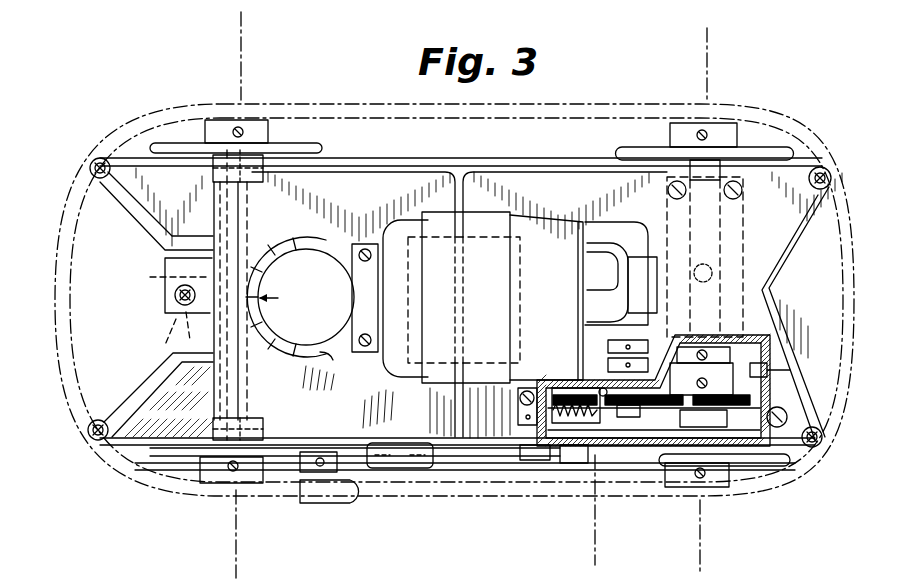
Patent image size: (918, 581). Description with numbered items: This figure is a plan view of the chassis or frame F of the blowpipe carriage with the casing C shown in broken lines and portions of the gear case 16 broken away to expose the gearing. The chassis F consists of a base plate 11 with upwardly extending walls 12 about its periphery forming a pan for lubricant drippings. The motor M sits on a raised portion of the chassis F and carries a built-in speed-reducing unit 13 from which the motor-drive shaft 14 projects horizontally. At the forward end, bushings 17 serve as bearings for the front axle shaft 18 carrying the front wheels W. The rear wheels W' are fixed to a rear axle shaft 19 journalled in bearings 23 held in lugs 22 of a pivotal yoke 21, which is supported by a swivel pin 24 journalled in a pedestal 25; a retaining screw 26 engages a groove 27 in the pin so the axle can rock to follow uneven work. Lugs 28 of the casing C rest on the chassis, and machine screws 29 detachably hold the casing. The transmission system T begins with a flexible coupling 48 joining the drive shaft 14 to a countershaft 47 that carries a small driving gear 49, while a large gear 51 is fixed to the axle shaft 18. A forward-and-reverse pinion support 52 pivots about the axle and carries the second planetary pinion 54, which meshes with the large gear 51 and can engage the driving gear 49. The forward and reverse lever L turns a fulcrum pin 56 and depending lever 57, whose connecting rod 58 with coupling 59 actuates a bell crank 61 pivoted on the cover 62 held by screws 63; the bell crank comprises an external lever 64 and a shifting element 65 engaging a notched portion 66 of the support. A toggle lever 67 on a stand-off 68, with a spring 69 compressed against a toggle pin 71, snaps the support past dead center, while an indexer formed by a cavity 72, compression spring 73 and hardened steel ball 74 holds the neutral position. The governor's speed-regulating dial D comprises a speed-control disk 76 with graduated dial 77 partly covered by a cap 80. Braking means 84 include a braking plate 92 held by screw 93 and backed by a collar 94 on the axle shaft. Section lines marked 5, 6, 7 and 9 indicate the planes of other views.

The section line 5- 5 is at (710, 47).
The section line 6- 6 is at (244, 43).
The section line 7- 7 is at (591, 548).
The section line 9- 9 is at (481, 444).
The base plate 11 is at (443, 432).
The upwardly extending flanges or walls 12 is at (562, 158).
The built-in speed-reducing unit 13 is at (618, 218).
The motor-drive shaft 14 is at (628, 340).
The gear case 16 is at (730, 418).
The bushings 17 is at (690, 170).
The front axle shaft 18 is at (700, 243).
The rear axle shaft 19 is at (244, 390).
The pivotal yoke 21 is at (238, 370).
The ears or lugs 22 is at (250, 185).
The bearings 23 is at (250, 182).
The swivel pin 24 is at (165, 278).
The pedestal 25 is at (182, 258).
The retaining screw 26 is at (178, 301).
The groove 27 is at (181, 350).
The lugs 28 is at (104, 195).
The machine screws 29 is at (832, 165).
The countershaft 47 is at (655, 430).
The flexible coupling 48 is at (608, 346).
The small driving gear 49 is at (622, 430).
The large gear 51 is at (700, 398).
The forward-and-reverse pinion support 52 is at (638, 430).
The second planetary pinion 54 is at (668, 432).
The fulcrum pin 56 is at (322, 505).
The lever 57 is at (305, 475).
The connecting rod 58 is at (467, 462).
The coupling 59 is at (385, 445).
The bell crank 61 is at (548, 462).
The cover 62 is at (722, 228).
The screws 63 is at (670, 196).
The lever 64 is at (530, 460).
The shifting element 65 is at (574, 464).
The notched portion 66 is at (590, 465).
The toggle lever 67 is at (560, 388).
The stand-off 68 is at (546, 383).
The spring 69 is at (575, 402).
The toggle pin 71 is at (598, 388).
The cavity 72 is at (518, 396).
The compression spring 73 is at (530, 442).
The hardened steel ball 74 is at (556, 450).
The speed-control disk 76 is at (325, 357).
The graduated dial 77 is at (288, 248).
The cap 80 is at (320, 268).
The braking means 84 is at (742, 366).
The braking plate 92 is at (716, 372).
The screw 93 is at (790, 371).
The collar 94 is at (718, 348).
The casing C is at (66, 398).
The speed-regulating dial D is at (266, 238).
The chassis or frame F is at (486, 158).
The forward and reverse lever L is at (348, 508).
The motor M is at (483, 297).
The gear transmission system T is at (651, 423).
The front wheels W is at (711, 284).
The rear wheels W' is at (227, 295).